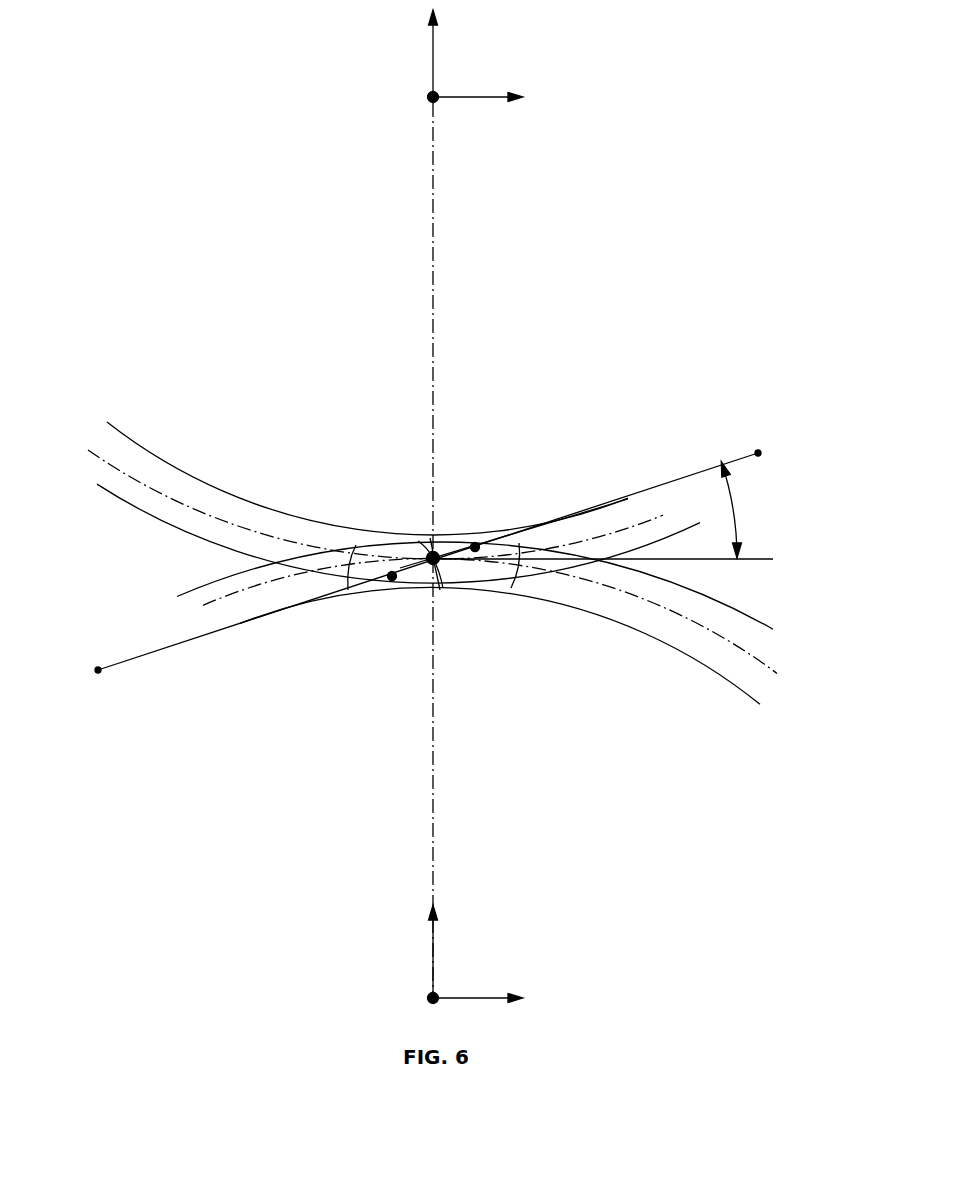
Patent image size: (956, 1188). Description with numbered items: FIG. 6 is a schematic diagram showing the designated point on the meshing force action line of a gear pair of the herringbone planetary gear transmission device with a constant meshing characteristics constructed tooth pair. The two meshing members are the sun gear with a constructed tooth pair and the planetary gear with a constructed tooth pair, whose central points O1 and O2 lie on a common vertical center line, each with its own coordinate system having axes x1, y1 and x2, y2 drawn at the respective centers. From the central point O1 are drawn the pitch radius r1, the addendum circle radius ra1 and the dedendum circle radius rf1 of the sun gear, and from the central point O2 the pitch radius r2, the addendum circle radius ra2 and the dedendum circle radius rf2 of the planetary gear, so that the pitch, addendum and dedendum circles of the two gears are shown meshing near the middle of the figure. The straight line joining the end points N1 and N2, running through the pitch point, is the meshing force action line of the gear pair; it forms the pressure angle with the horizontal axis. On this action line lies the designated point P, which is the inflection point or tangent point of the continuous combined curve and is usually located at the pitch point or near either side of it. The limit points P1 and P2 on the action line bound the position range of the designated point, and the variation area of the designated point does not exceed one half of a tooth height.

The central point of the sun gear O1 is at (412, 1009).
The central point of the planetary gear O2 is at (412, 96).
The x-axis of first gear coordinate system x1 is at (478, 980).
The y-axis of first gear coordinate system y1 is at (417, 949).
The x-axis of second gear coordinate system x2 is at (478, 78).
The y-axis of second gear coordinate system y2 is at (417, 50).
The designated point P is at (434, 553).
The limit point of the position range of the designated point P1 is at (392, 580).
The limit point of the position range of the designated point P2 is at (478, 545).
The end point of the meshing force action line N1 is at (421, 591).
The end point of the meshing force action line N2 is at (767, 438).
The pitch radius of the sun gear r1 is at (433, 998).
The pitch radius of the planetary gear r2 is at (433, 97).
The addendum circle radius of the sun gear ra1 is at (433, 998).
The addendum circle radius of the planetary gear ra2 is at (433, 97).
The dedendum circle radius of the sun gear rf1 is at (433, 998).
The dedendum circle radius of the planetary gear rf2 is at (433, 97).